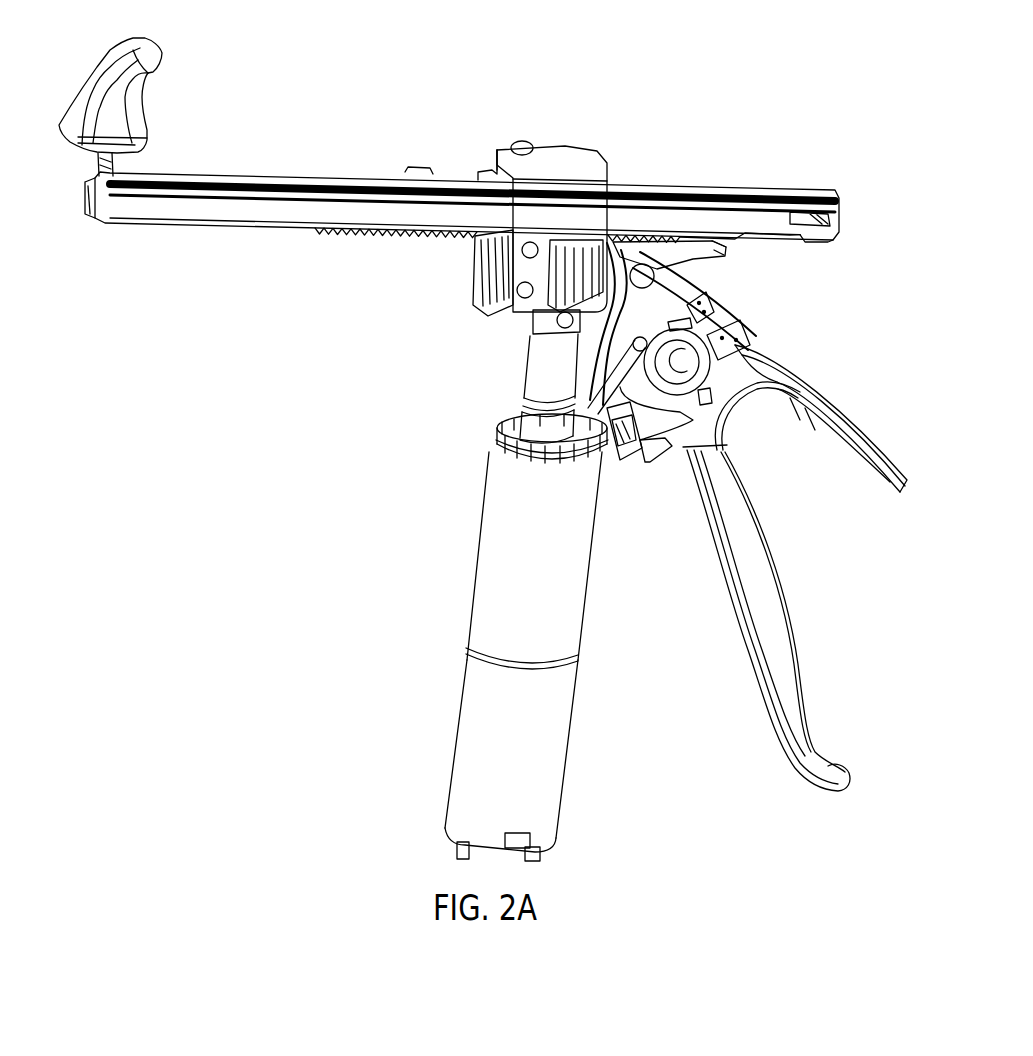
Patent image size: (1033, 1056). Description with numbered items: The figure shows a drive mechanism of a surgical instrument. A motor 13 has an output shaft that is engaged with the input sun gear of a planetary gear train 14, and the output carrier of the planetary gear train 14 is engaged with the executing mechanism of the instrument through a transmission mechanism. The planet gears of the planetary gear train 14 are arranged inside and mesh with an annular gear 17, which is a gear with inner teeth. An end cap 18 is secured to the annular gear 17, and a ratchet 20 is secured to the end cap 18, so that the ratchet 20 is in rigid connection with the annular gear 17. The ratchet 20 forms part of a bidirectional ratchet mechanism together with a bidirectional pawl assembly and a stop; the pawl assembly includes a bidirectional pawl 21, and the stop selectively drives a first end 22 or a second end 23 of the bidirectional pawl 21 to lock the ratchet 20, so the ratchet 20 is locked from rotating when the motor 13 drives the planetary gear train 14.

The motor 13 is at (537, 770).
The planetary gear train 14 is at (394, 528).
The annular gear 17 is at (585, 602).
The end cap 18 is at (494, 452).
The ratchet 20 is at (490, 432).
The bidirectional pawl 21 is at (647, 465).
The first end 22 is at (622, 462).
The second end 23 is at (577, 425).